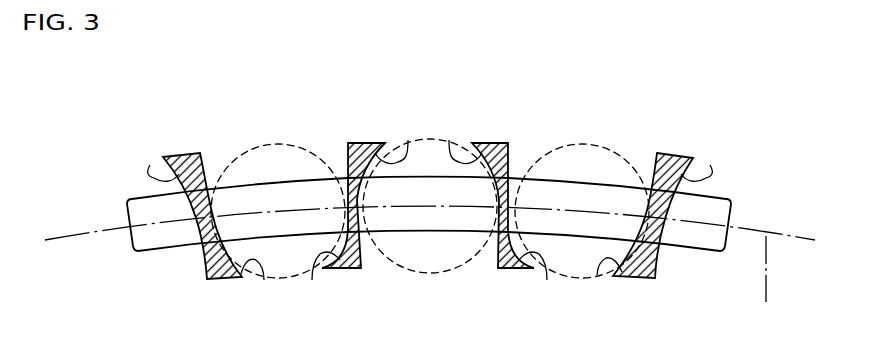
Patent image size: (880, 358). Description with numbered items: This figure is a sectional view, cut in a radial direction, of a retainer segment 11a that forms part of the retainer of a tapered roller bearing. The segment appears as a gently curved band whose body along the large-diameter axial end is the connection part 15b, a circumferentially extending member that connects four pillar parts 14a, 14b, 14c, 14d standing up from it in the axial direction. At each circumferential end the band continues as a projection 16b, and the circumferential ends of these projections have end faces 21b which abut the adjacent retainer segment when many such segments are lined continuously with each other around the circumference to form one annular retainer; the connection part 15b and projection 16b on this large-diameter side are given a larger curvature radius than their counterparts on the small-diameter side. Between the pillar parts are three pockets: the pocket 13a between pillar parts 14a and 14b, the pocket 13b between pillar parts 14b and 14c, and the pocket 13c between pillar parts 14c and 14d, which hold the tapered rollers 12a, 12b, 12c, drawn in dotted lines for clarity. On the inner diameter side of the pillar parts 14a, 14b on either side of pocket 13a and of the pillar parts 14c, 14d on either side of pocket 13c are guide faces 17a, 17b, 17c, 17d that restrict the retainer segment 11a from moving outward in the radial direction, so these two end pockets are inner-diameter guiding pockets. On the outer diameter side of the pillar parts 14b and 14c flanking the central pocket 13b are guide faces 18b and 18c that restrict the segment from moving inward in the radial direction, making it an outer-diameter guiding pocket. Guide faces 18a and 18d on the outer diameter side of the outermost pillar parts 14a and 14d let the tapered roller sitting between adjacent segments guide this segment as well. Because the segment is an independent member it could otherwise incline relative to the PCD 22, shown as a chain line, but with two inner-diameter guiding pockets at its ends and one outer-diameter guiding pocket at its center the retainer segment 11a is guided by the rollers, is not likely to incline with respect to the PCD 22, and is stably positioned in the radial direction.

The retainer segment 11a is at (711, 71).
The tapered roller 12a is at (290, 155).
The tapered roller 12b is at (430, 255).
The tapered roller 12c is at (564, 155).
The pocket 13a is at (250, 170).
The pocket 13b is at (460, 253).
The pocket 13c is at (604, 172).
The pillar part 14a is at (185, 155).
The pillar part 14b is at (357, 141).
The pillar part 14c is at (489, 141).
The pillar part 14d is at (667, 155).
The connection part 15b is at (395, 198).
The projection 16b is at (158, 237).
The guide face 17a is at (264, 280).
The guide face 17b is at (312, 280).
The guide face 17c is at (547, 280).
The guide face 17d is at (597, 275).
The guide face 18a is at (150, 165).
The guide face 18b is at (408, 140).
The guide face 18c is at (449, 140).
The guide face 18d is at (710, 165).
The end face 21b is at (126, 205).
The PCD 22 is at (769, 284).